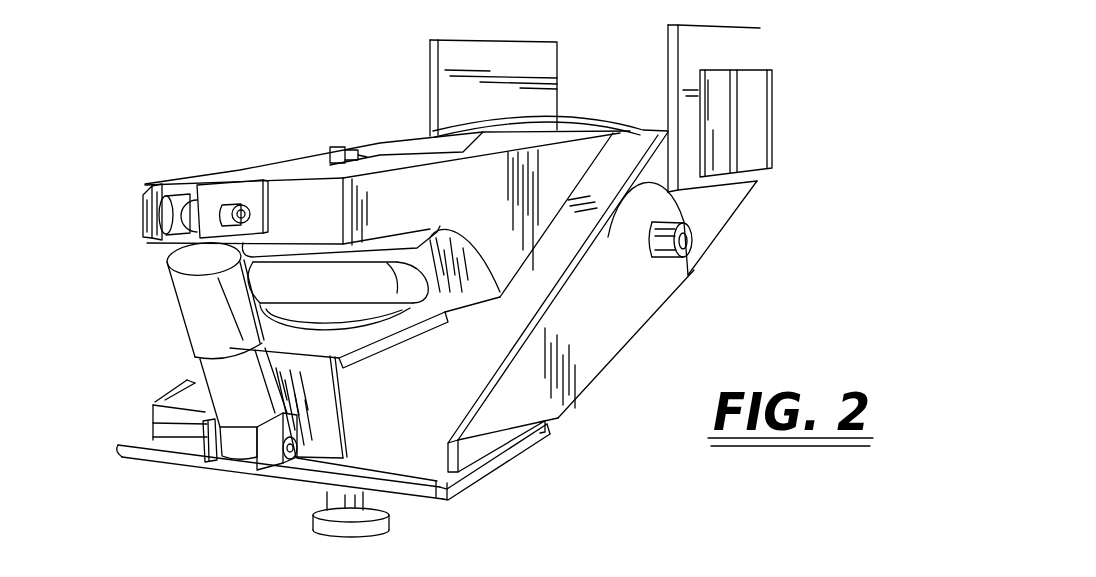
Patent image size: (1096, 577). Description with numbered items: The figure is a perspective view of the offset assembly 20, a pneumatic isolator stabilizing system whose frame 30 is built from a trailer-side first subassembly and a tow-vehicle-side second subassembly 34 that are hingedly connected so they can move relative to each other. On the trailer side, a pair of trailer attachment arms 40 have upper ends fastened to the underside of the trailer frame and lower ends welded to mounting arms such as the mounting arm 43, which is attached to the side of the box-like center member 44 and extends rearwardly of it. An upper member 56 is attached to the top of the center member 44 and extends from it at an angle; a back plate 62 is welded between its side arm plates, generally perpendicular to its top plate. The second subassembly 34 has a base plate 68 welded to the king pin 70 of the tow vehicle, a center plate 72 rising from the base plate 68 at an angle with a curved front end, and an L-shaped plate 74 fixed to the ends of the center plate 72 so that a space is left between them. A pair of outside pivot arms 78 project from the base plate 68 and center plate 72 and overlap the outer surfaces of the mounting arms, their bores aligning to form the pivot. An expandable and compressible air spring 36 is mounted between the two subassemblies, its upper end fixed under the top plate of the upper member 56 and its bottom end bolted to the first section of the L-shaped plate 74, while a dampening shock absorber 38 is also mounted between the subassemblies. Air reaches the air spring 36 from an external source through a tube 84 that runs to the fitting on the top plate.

The offset assembly 20 is at (175, 162).
The upper member 56 is at (302, 176).
The tube 84 is at (378, 150).
The trailer attachment arms 40 is at (543, 72).
The center member 44 is at (634, 149).
The mounting arm 43 is at (703, 208).
The back plate 62 is at (452, 263).
The air spring 36 is at (412, 288).
The shock absorber 38 is at (192, 305).
The L-shaped plate 74 is at (317, 398).
The frame 30 is at (632, 343).
The outside pivot arm 78 is at (580, 363).
The base plate 68 is at (527, 447).
The center plate 72 is at (447, 499).
The second subassembly 34 is at (397, 485).
The king pin 70 is at (343, 495).